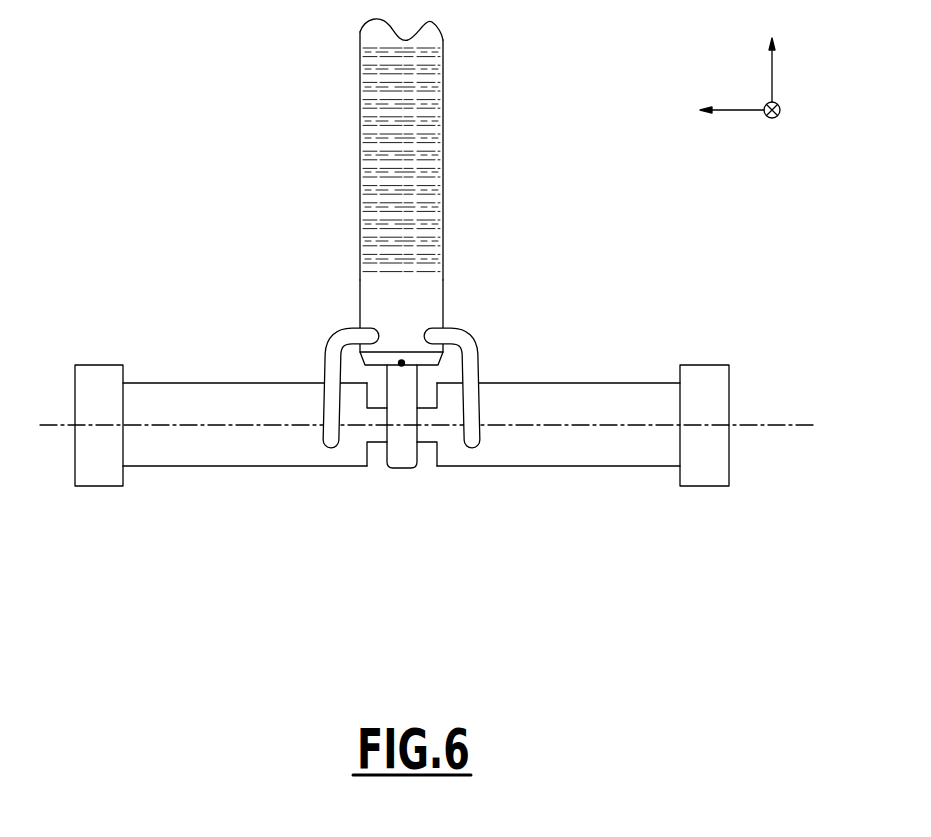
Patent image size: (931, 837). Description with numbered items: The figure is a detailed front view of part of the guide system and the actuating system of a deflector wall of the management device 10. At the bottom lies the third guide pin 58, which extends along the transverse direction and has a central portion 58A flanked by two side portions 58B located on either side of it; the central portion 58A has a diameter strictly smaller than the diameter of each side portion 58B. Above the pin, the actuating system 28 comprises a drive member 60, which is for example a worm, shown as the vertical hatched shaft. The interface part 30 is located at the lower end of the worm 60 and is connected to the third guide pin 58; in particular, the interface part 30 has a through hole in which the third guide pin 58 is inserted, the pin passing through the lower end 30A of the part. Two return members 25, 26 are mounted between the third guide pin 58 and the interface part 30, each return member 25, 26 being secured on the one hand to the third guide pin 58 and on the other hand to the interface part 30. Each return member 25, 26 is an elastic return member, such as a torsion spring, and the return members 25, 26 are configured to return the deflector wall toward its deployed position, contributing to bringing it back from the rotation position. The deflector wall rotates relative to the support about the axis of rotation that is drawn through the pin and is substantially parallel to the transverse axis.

The management device 10 is at (715, 530).
The return member 25 is at (470, 358).
The return member 26 is at (336, 341).
The actuating system 28 is at (490, 98).
The interface part 30 is at (371, 296).
The tube end face 30A is at (408, 306).
The third guide pin 58 is at (583, 478).
The central portion 58A is at (376, 418).
The side portions 58B is at (204, 405).
The drive member 60 is at (363, 150).